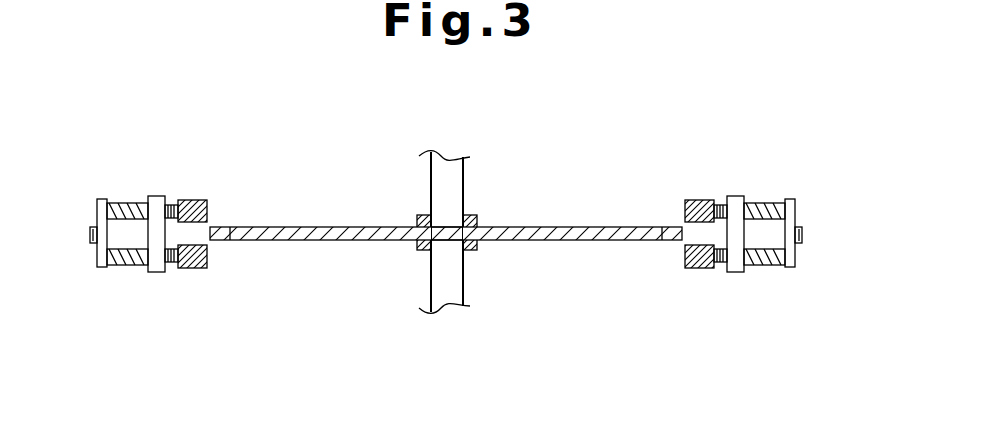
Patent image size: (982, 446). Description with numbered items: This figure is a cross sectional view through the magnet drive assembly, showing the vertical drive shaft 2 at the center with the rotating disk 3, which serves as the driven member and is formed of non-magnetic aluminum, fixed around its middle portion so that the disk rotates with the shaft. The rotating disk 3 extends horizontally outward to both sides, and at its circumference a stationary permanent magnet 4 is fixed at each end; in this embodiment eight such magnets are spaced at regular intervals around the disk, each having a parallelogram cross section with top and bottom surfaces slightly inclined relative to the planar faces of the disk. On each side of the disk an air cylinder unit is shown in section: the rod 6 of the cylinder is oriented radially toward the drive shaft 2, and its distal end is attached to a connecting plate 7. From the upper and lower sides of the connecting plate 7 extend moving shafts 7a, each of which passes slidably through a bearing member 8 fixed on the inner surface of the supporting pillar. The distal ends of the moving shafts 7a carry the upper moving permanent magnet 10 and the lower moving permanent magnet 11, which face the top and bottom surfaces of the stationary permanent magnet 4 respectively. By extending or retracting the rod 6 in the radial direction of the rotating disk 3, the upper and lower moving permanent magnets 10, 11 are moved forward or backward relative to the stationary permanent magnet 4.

The vertical drive shaft 2 is at (465, 282).
The rotating disk 3 is at (558, 226).
The stationary permanent magnet 4 is at (222, 242).
The rod 6 is at (88, 233).
The connecting plate 7 is at (97, 266).
The moving shaft 7a is at (117, 204).
The bearing member 8 is at (157, 273).
The upper moving permanent magnet 10 is at (191, 199).
The lower moving permanent magnet 11 is at (192, 269).